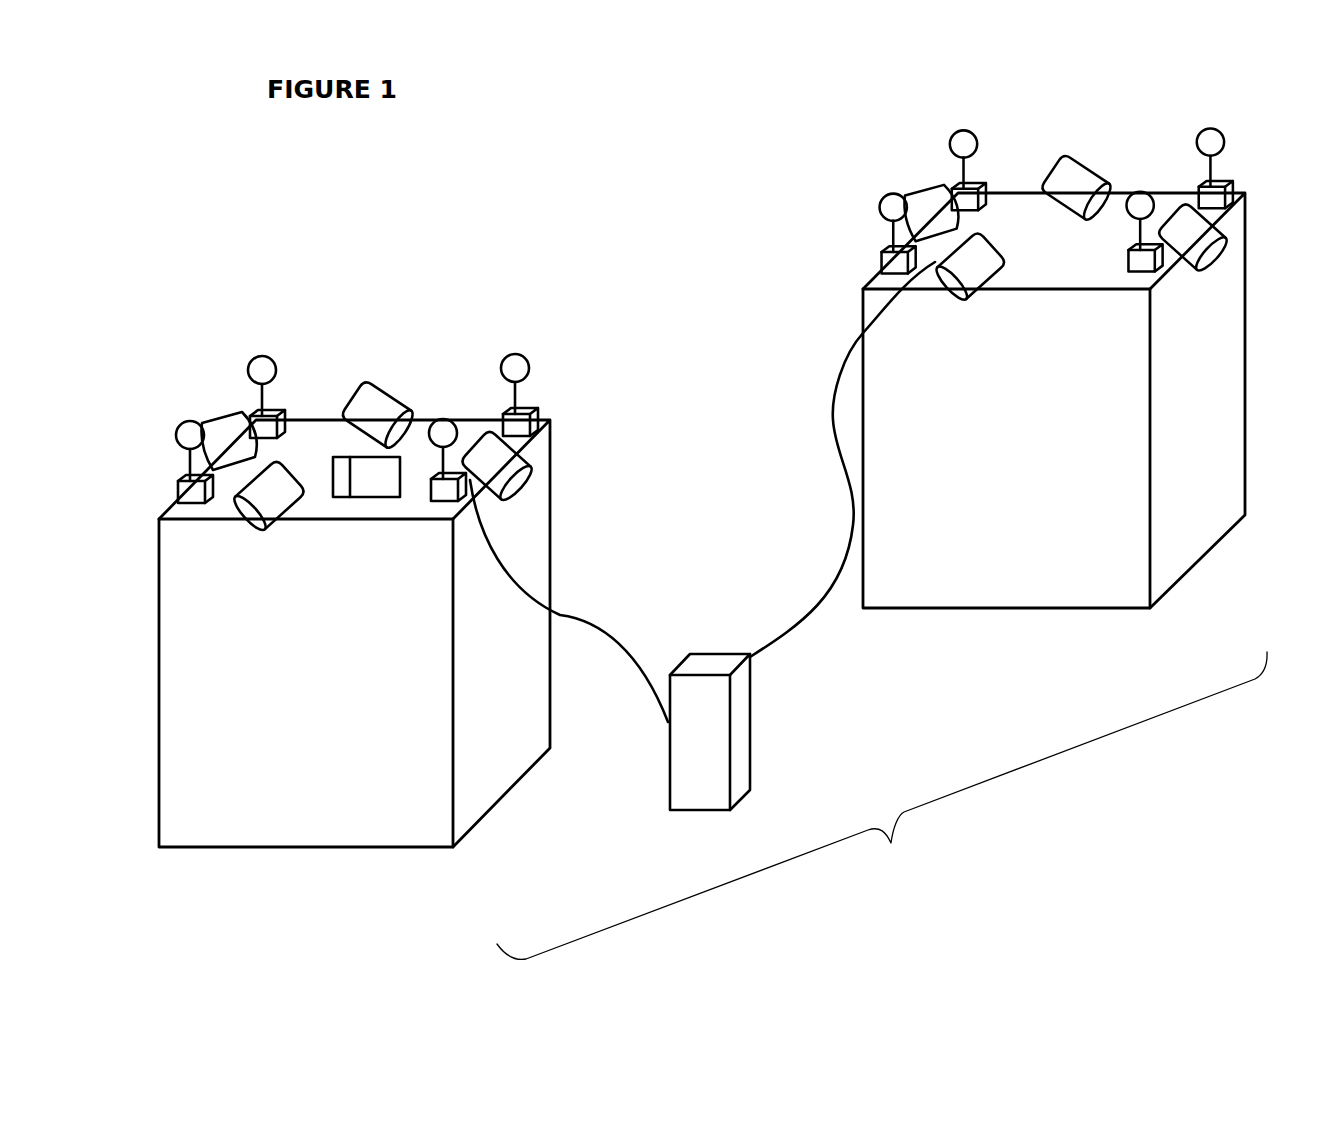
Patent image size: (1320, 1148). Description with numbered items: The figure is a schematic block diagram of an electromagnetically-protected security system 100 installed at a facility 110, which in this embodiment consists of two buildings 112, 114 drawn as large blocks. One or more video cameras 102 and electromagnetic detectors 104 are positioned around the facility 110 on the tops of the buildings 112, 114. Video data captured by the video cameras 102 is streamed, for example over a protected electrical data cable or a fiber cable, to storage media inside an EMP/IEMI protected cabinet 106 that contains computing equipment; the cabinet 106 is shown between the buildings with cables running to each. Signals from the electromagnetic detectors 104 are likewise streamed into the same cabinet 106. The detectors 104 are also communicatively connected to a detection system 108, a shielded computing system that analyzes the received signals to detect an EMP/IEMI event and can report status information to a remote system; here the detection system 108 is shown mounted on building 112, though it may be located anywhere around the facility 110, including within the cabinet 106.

The electromagnetically-protected security system 100 is at (607, 170).
The video camera 102 is at (385, 364).
The electromagnetic detector 104 is at (550, 404).
The EMP/IEMI protected cabinet 106 is at (710, 732).
The detection system 108 is at (366, 477).
The facility 110 is at (882, 805).
The building 112 is at (354, 601).
The building 114 is at (1054, 368).